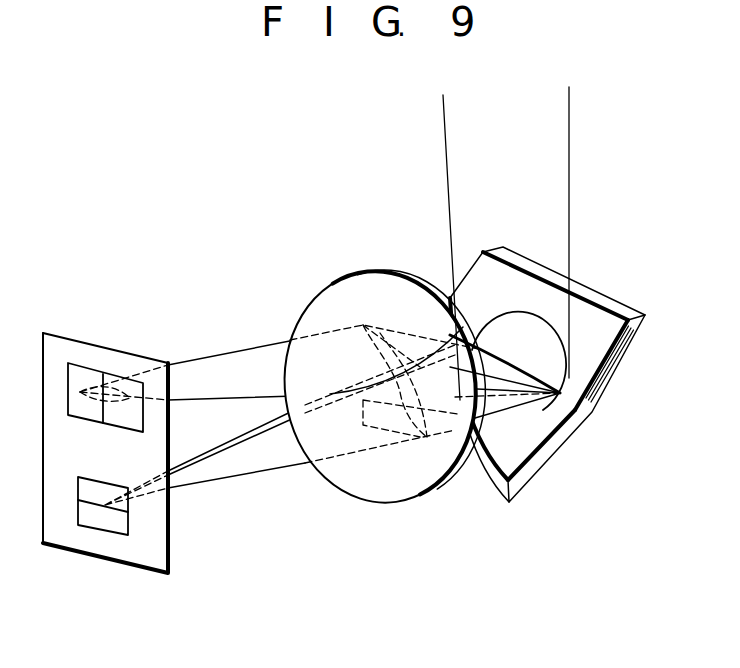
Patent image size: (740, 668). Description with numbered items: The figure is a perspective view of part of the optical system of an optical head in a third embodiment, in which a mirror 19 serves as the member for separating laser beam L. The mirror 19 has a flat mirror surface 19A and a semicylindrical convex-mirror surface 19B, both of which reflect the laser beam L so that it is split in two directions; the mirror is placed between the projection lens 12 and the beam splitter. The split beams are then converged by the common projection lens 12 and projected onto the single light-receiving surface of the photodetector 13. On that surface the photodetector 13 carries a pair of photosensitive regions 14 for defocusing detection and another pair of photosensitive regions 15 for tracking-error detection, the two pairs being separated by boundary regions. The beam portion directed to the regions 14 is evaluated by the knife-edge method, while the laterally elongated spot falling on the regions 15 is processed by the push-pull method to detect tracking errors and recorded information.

The projection lens 12 is at (437, 488).
The photodetector 13 is at (210, 537).
The photosensitive regions 14 is at (97, 516).
The photosensitive regions 15 is at (85, 375).
The mirror 19 is at (552, 374).
The flat mirror surface 19A is at (595, 313).
The semicylindrical convex-mirror surface 19B is at (545, 428).
The laser beam L is at (557, 207).